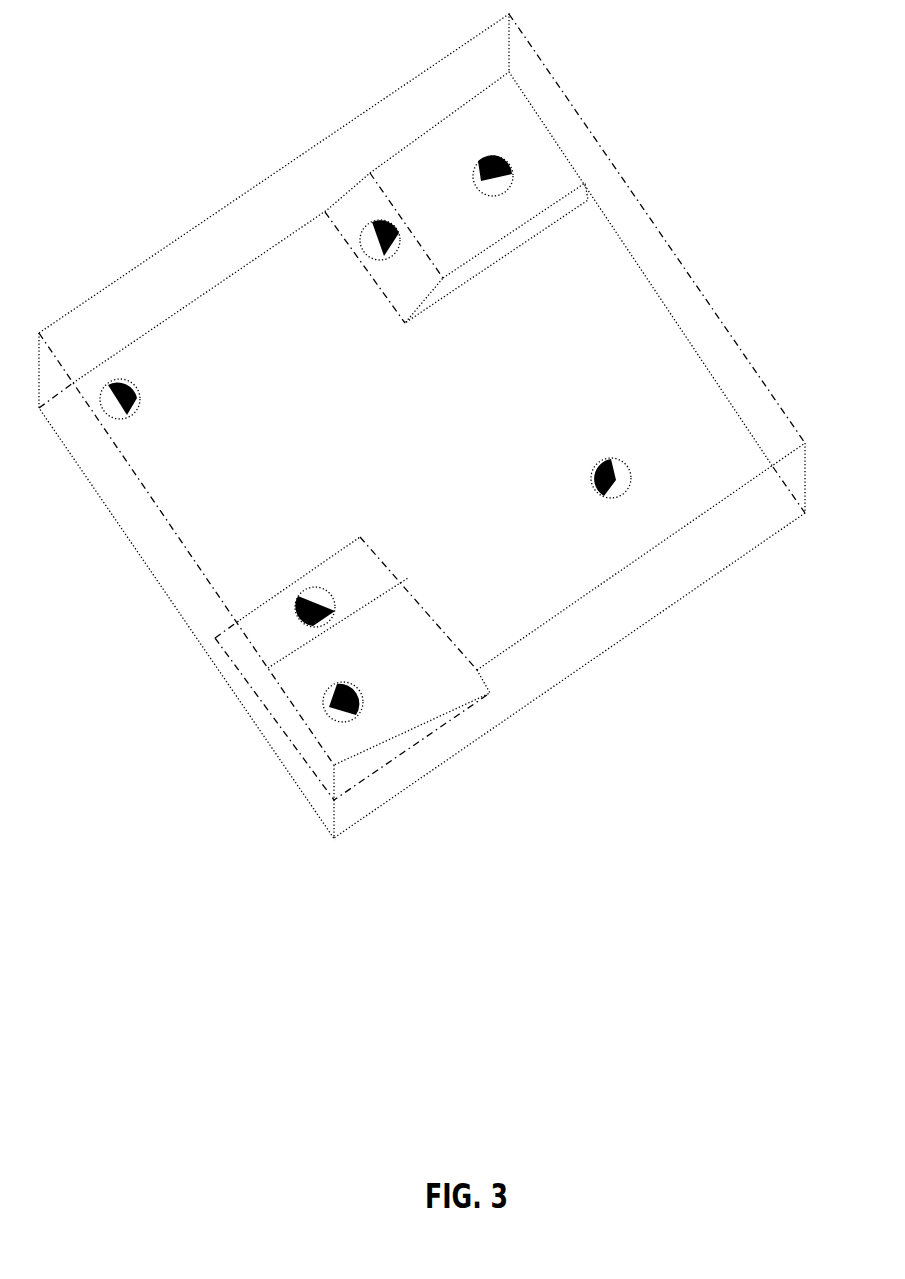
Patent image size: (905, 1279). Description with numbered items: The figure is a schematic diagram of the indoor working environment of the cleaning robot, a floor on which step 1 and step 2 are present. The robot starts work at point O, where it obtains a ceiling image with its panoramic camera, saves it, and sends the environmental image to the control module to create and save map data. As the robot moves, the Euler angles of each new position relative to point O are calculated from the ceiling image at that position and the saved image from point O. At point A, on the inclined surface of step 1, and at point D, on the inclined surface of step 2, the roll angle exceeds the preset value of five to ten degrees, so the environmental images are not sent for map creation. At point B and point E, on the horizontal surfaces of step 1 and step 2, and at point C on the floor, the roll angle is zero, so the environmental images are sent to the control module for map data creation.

The point O is at (123, 410).
The point A is at (381, 251).
The point B is at (505, 175).
The point C is at (620, 478).
The point D is at (326, 598).
The point E is at (353, 702).
The step 1 is at (457, 257).
The step 2 is at (397, 613).